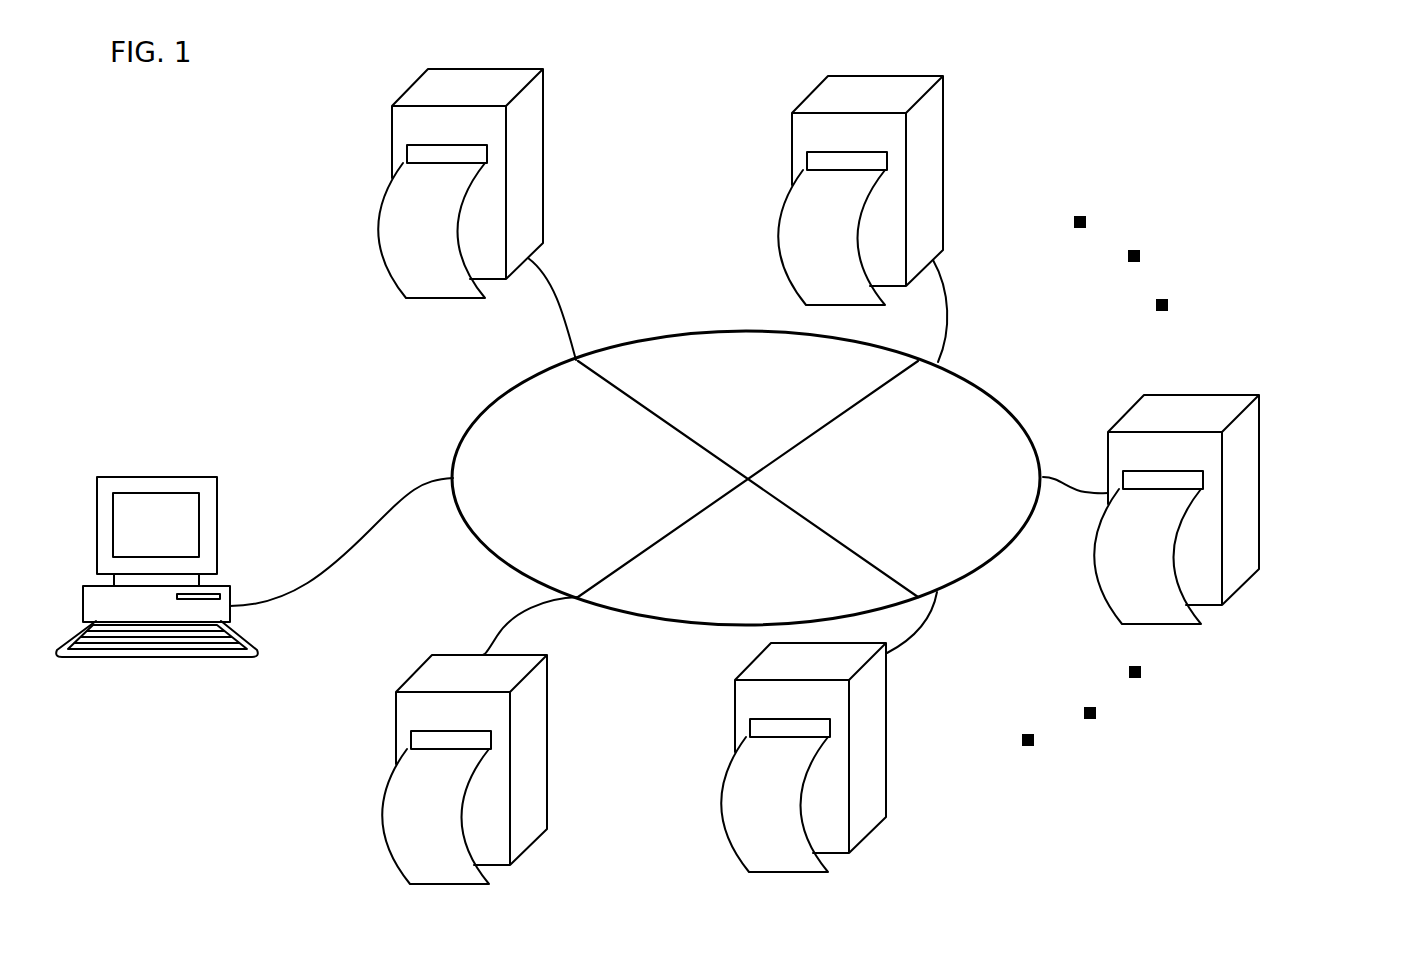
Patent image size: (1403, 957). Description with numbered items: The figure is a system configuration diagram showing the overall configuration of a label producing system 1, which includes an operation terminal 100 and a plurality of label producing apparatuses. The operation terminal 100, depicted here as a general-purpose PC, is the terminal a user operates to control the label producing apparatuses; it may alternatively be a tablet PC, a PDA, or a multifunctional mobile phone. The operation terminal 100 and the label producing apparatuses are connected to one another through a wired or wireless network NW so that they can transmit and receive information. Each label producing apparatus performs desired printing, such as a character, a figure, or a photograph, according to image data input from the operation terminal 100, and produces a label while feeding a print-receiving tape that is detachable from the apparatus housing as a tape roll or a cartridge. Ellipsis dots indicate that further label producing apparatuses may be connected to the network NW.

The label producing system 1 is at (1322, 116).
The operation terminal 100 is at (240, 484).
The network NW is at (1013, 414).